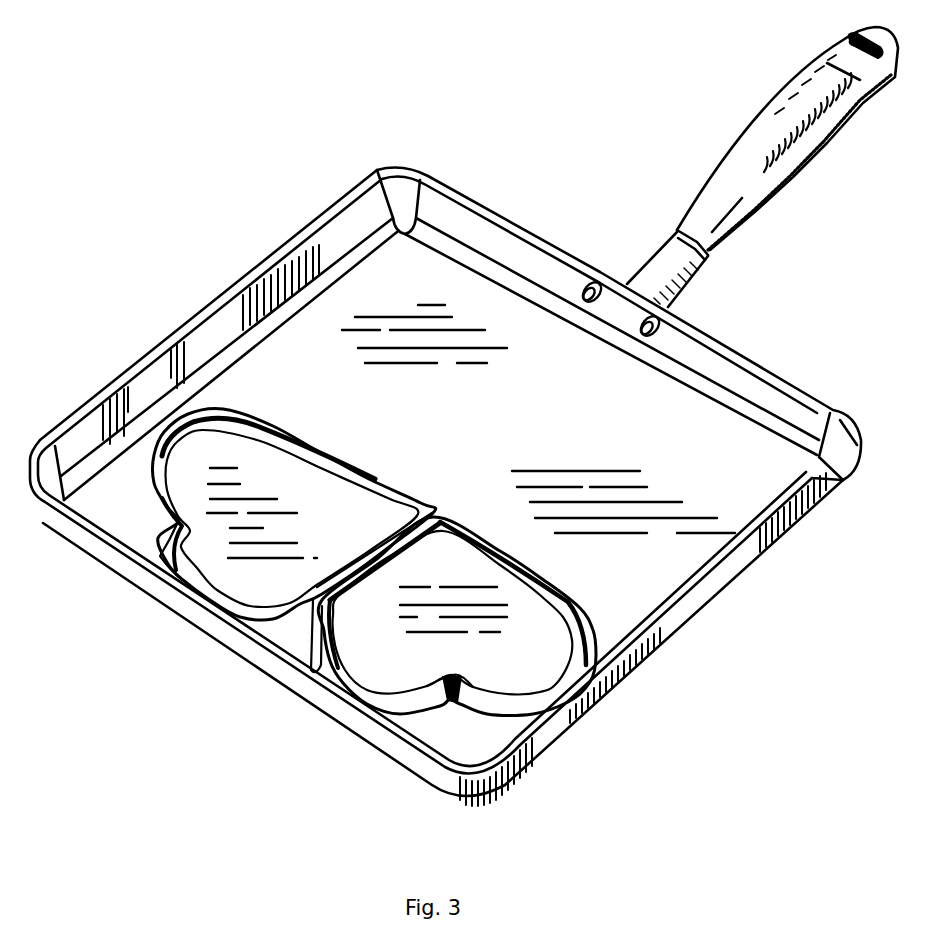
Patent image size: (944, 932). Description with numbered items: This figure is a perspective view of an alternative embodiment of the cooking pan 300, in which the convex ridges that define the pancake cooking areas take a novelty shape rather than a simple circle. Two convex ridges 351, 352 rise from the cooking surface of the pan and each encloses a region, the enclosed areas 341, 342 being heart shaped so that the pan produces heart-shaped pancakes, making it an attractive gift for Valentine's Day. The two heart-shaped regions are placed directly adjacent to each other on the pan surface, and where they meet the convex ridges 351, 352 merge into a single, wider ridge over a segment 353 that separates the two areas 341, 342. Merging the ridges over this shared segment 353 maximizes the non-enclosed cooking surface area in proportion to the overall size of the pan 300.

The cooking pan 300 is at (362, 173).
The heart-shaped area 341 is at (190, 484).
The heart-shaped area 342 is at (517, 617).
The convex ridge 351 is at (190, 577).
The convex ridge 352 is at (432, 700).
The segment 353 is at (318, 662).